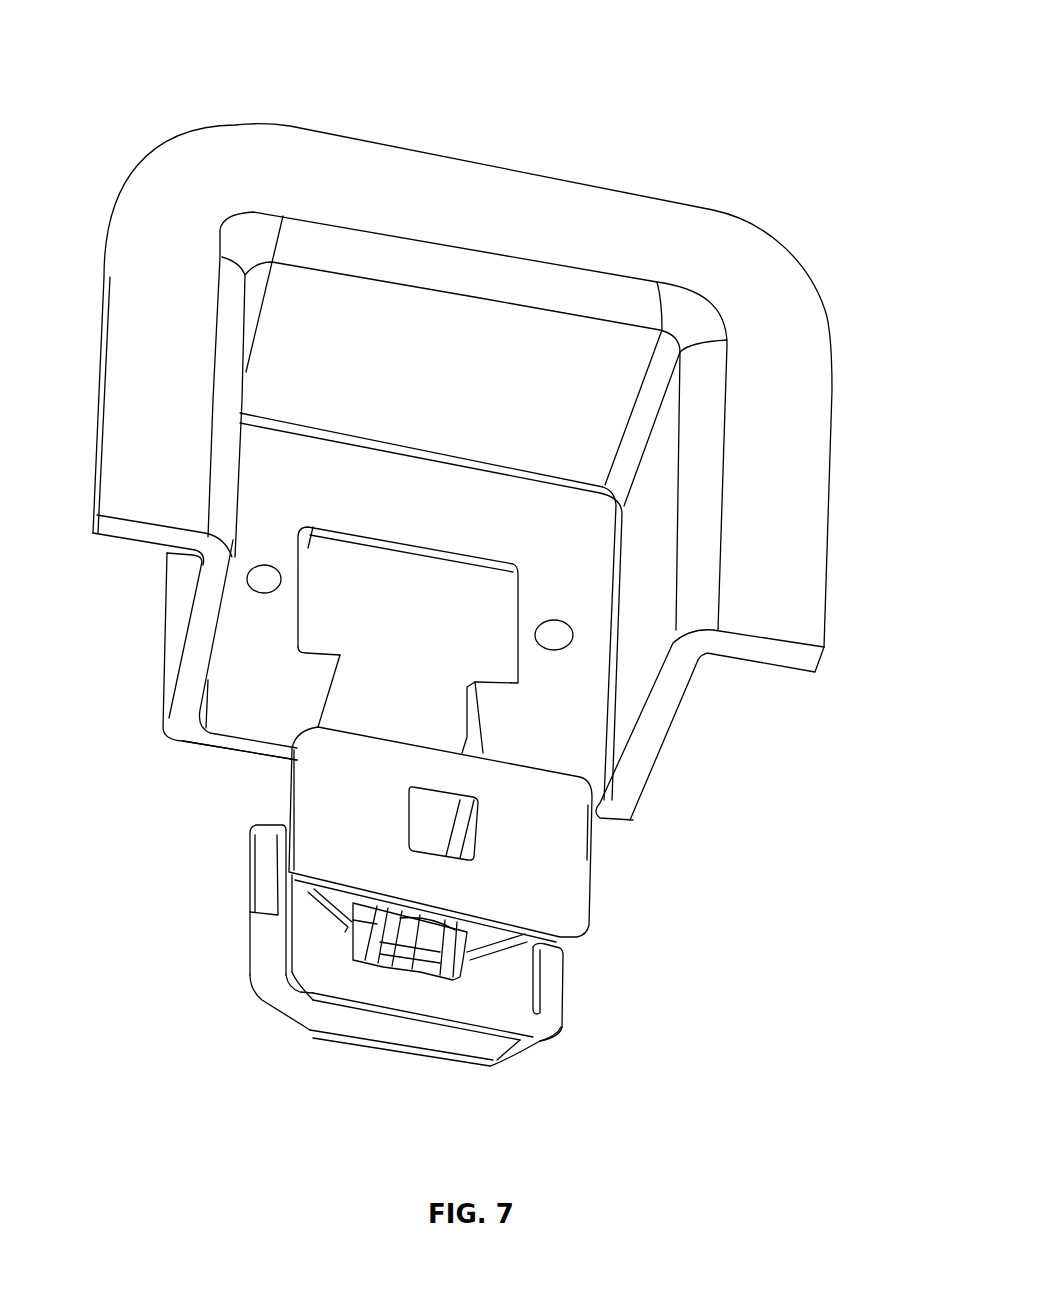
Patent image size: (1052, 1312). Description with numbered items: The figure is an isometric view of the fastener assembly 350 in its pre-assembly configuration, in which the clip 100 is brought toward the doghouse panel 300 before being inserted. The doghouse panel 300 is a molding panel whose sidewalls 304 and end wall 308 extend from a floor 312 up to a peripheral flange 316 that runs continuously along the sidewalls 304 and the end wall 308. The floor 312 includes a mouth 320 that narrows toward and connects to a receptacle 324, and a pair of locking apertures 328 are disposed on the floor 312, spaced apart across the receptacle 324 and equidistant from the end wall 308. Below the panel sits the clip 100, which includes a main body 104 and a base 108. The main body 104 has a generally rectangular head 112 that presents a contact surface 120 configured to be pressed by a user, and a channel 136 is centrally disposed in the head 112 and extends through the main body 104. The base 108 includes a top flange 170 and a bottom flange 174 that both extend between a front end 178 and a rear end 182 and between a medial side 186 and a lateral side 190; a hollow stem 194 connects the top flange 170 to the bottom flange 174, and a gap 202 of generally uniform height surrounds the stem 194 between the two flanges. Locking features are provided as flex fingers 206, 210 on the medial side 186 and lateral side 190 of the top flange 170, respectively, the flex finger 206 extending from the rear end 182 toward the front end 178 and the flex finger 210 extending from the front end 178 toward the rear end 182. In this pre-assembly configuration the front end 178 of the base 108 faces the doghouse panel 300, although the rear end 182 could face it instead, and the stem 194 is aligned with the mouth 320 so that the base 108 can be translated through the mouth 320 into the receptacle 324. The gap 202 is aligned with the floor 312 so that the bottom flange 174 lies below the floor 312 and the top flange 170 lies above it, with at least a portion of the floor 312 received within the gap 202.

The fastener assembly 350 is at (106, 34).
The doghouse panel 300 is at (768, 300).
The end wall 308 is at (513, 360).
The peripheral flange 316 is at (138, 297).
The receptacle 324 is at (328, 584).
The apertures 328 is at (264, 560).
The sidewalls 304 is at (183, 570).
The floor 312 is at (227, 700).
The mouth 320 is at (338, 699).
The front end 178 is at (445, 752).
The head 112 is at (566, 838).
The clip 100 is at (573, 920).
The main body 104 is at (560, 893).
The contact surface 120 is at (593, 855).
The channel 136 is at (424, 837).
The flex finger 210 is at (262, 888).
The lateral side 190 is at (298, 928).
The gap 202 is at (266, 976).
The top flange 170 is at (297, 973).
The stem 194 is at (362, 1010).
The rear end 182 is at (400, 996).
The bottom flange 174 is at (330, 1024).
The base 108 is at (460, 1010).
The flex finger 206 is at (557, 967).
The medial side 186 is at (555, 978).